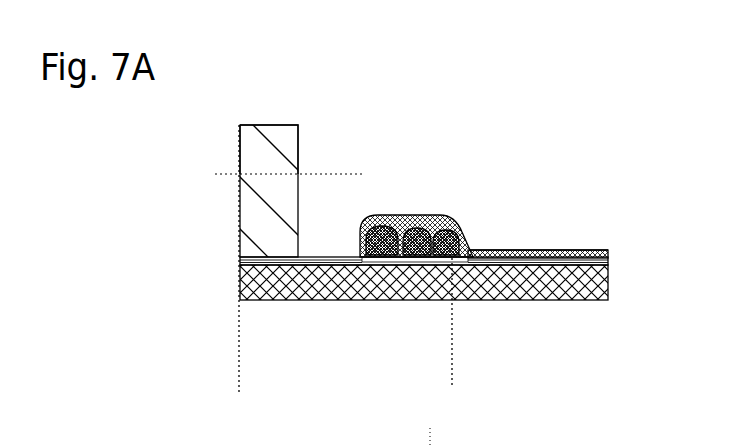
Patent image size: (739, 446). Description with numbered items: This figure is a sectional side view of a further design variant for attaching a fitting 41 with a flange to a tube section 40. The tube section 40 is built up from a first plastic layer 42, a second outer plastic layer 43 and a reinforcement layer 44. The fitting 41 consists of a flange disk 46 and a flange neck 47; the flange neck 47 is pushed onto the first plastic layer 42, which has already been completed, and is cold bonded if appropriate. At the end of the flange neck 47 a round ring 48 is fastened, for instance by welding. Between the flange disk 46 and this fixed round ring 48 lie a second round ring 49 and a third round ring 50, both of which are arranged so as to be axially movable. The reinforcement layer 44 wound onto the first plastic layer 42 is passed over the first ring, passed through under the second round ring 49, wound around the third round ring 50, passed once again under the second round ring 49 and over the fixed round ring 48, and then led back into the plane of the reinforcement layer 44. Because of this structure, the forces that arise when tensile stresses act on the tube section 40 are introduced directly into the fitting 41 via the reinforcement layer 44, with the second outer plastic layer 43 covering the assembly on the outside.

The tube section 40 is at (549, 283).
The fitting 41 is at (258, 212).
The first plastic layer 42 is at (592, 283).
The second outer plastic layer 43 is at (532, 257).
The reinforcement layer 44 is at (585, 259).
The flange disk 46 is at (255, 155).
The flange neck 47 is at (338, 258).
The round ring 48 is at (447, 245).
The second round ring 49 is at (415, 242).
The third round ring 50 is at (380, 232).